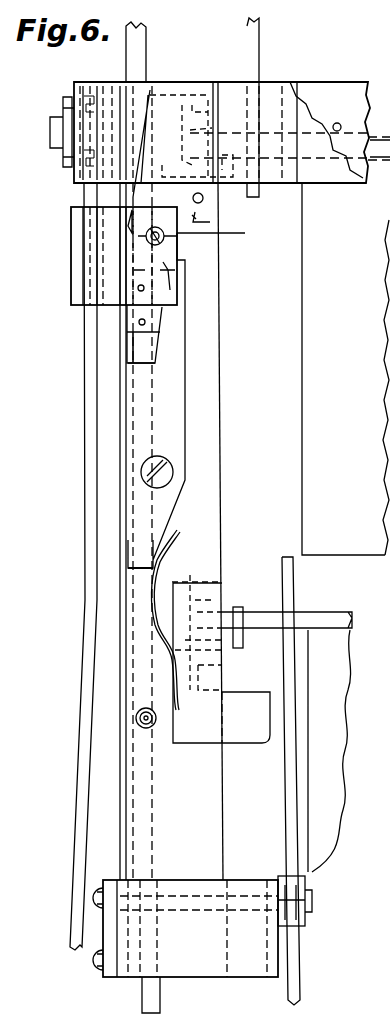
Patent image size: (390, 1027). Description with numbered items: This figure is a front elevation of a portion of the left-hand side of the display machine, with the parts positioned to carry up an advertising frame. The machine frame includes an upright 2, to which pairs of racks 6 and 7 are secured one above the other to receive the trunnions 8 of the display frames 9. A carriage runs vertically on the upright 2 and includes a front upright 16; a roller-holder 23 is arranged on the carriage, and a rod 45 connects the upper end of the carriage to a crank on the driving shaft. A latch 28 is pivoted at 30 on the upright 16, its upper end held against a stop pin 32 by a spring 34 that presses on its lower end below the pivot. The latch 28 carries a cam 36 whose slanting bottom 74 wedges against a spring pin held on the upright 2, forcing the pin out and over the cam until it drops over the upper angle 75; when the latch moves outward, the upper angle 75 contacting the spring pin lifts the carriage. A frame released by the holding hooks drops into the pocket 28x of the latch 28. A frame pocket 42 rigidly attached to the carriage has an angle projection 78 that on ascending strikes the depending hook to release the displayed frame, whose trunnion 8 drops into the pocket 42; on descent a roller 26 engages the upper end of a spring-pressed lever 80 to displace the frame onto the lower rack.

The upright 2 is at (146, 55).
The roller-holder 23 is at (177, 83).
The rack 6 is at (210, 138).
The stop pin 32 is at (205, 200).
The pocket 28x is at (226, 231).
The upper angle of cam 75 is at (150, 272).
The cam 36 is at (163, 325).
The slanting bottom of cam 74 is at (152, 353).
The latch 28 is at (182, 392).
The upright of carriage 16 is at (210, 433).
The pivot 30 is at (170, 473).
The spring 34 is at (178, 540).
The rack 7 is at (200, 583).
The trunnion 8 is at (248, 620).
The lever 80 is at (294, 590).
The pocket 42 is at (200, 680).
The display frame 9 is at (345, 672).
The angle projection 78 is at (221, 663).
The rod 45 is at (84, 718).
The roller 26 is at (300, 926).